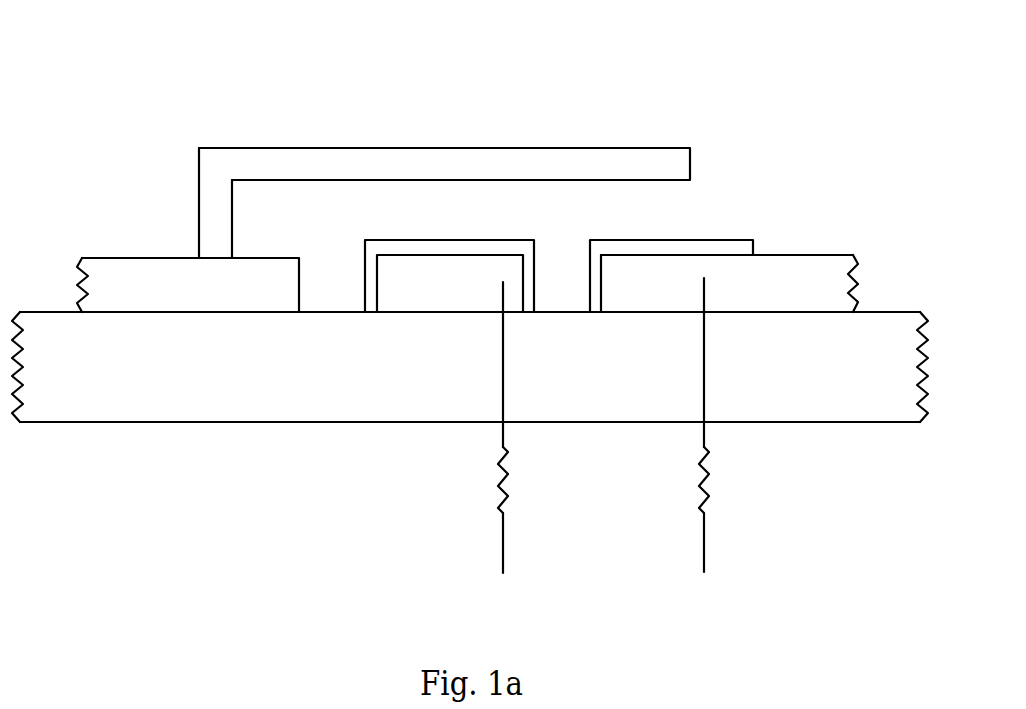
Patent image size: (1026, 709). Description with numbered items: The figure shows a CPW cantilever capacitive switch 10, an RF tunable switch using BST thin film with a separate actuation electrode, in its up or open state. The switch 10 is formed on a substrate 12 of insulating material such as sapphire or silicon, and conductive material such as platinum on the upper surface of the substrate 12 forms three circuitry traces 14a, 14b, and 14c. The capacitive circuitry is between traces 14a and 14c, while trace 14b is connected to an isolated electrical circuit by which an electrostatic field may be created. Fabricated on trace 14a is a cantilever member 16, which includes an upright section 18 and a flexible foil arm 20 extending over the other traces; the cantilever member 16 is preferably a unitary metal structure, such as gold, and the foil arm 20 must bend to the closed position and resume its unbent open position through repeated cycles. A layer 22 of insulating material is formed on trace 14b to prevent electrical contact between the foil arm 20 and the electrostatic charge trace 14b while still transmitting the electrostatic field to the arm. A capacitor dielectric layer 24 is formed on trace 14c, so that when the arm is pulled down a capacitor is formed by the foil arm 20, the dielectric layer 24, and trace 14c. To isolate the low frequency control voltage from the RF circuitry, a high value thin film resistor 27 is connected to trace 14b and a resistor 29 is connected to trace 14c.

The CPW cantilever capacitive switch 10 is at (375, 116).
The substrate 12 is at (565, 330).
The circuitry trace 14a is at (152, 287).
The circuitry trace 14b is at (456, 287).
The circuitry trace 14c is at (825, 287).
The cantilever member 16 is at (211, 166).
The upright section 18 is at (211, 225).
The flexible foil arm 20 is at (503, 147).
The layer of insulating material 22 is at (452, 249).
The capacitor dielectric layer 24 is at (730, 245).
The resistor 27 is at (533, 478).
The resistor 29 is at (728, 478).